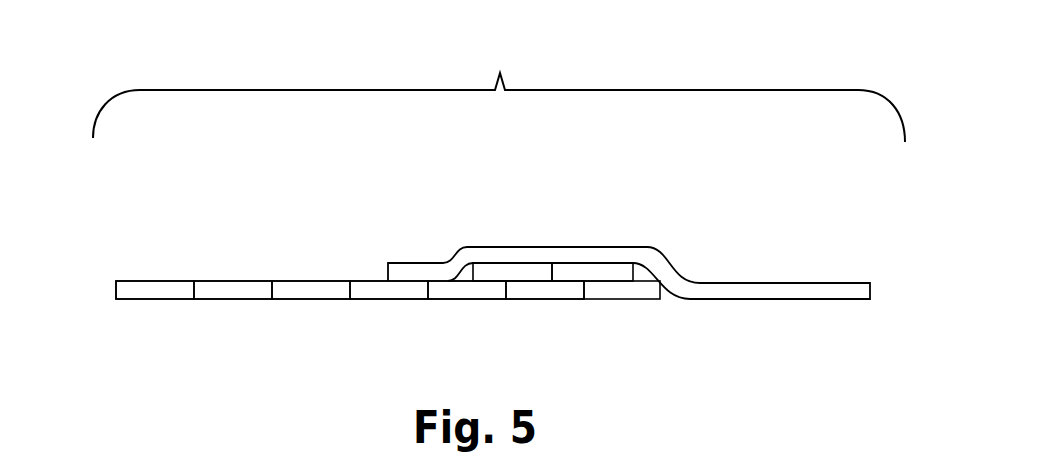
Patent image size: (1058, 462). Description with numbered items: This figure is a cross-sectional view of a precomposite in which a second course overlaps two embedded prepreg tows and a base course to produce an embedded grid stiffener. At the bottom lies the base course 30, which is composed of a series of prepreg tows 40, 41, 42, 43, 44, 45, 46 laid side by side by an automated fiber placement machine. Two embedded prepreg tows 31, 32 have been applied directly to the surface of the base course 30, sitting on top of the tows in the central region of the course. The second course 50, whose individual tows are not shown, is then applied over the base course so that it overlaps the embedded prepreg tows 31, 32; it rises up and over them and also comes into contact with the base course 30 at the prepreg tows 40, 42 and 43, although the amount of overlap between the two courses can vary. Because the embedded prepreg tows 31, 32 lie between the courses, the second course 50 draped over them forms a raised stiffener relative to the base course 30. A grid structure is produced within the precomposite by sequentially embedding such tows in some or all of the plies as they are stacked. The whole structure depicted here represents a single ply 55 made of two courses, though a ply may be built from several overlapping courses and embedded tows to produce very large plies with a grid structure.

The base course 30 is at (156, 260).
The embedded prepreg tow 31 is at (498, 273).
The embedded prepreg tow 32 is at (607, 272).
The prepreg tow 40 is at (389, 329).
The prepreg tow 41 is at (535, 299).
The prepreg tow 42 is at (453, 299).
The prepreg tow 43 is at (385, 299).
The prepreg tow 44 is at (300, 299).
The prepreg tow 45 is at (213, 299).
The prepreg tow 46 is at (127, 299).
The second course 50 is at (810, 283).
The ply 55 is at (499, 91).